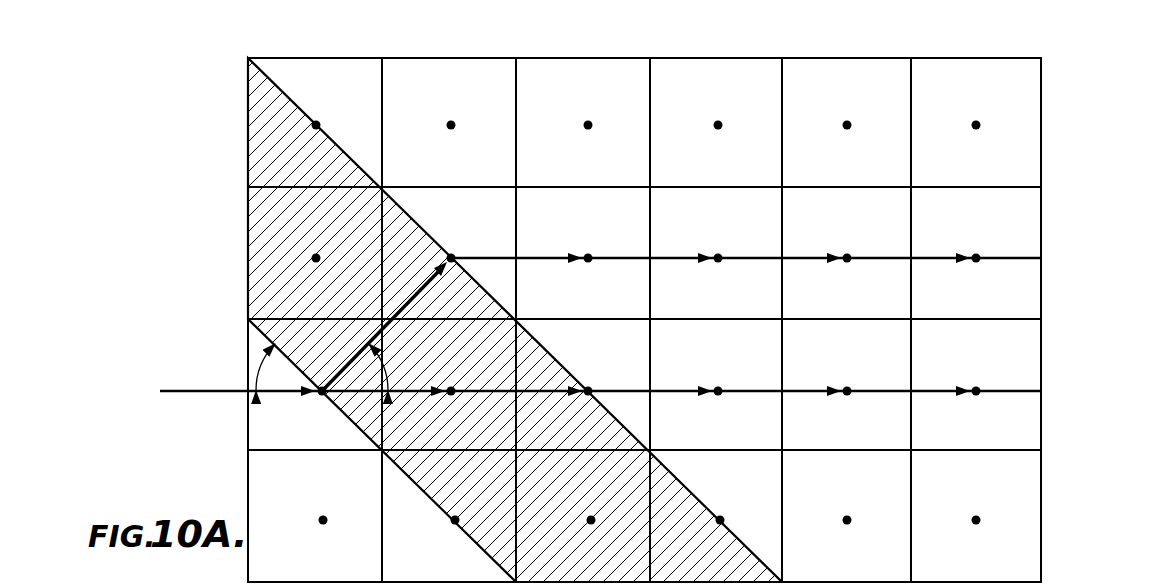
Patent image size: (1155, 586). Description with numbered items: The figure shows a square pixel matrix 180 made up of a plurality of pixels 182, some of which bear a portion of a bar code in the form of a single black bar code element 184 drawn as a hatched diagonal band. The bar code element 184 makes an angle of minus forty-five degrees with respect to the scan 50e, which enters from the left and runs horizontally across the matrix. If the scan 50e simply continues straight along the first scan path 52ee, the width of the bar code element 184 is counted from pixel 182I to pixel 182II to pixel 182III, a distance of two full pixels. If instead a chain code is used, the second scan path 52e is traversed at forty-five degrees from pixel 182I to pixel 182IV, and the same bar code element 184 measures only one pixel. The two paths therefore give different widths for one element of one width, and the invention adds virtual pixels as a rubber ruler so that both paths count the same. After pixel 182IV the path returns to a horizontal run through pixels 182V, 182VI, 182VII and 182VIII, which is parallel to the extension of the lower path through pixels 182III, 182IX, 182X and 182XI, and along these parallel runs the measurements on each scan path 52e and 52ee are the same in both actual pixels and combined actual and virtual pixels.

The square pixel matrix 180 is at (1055, 110).
The pixels 182 is at (974, 254).
The bar code element 184 is at (273, 122).
The scan 50e is at (225, 388).
The second scan path 52e is at (418, 388).
The first scan path 52ee is at (398, 313).
The pixel 182I is at (322, 397).
The pixel 182II is at (452, 397).
The pixel 182III is at (588, 397).
The pixel 182IV is at (451, 254).
The pixel 182V is at (588, 254).
The pixel 182VI is at (718, 254).
The pixel 182VII is at (847, 254).
The pixel 182VIII is at (976, 254).
The pixel 182IX is at (718, 387).
The pixel 182X is at (847, 387).
The pixel 182XI is at (977, 387).